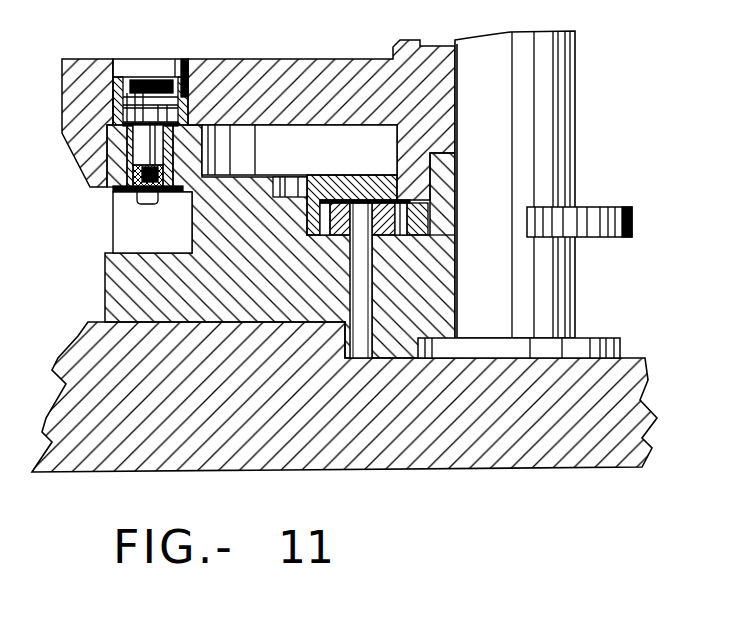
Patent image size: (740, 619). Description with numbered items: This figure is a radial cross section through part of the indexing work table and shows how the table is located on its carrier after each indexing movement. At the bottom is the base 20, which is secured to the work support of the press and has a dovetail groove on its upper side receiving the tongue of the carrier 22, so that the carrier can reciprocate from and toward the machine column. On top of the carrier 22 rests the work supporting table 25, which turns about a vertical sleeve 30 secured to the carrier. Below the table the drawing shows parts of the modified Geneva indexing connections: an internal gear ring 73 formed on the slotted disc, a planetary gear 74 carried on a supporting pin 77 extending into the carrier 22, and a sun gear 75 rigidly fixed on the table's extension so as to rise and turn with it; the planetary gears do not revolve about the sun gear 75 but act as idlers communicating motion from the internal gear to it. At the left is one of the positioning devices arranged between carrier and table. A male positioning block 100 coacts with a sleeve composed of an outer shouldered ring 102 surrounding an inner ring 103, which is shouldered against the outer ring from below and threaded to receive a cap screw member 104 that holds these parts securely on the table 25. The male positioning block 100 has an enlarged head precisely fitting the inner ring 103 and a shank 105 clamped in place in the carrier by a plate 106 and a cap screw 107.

The base 20 is at (344, 397).
The carrier 22 is at (120, 289).
The work supporting table 25 is at (258, 112).
The sleeve 30 is at (556, 126).
The internal gear ring 73 is at (311, 176).
The planetary gears 74 is at (334, 205).
The sun gear 75 is at (632, 208).
The supporting pins 77 is at (362, 210).
The male positioning blocks 100 is at (163, 112).
The outer shouldered ring 102 is at (113, 92).
The inner ring 103 is at (70, 118).
The cap screw member 104 is at (135, 70).
The shanks 105 is at (145, 147).
The plate 106 is at (113, 191).
The cap screw 107 is at (148, 204).